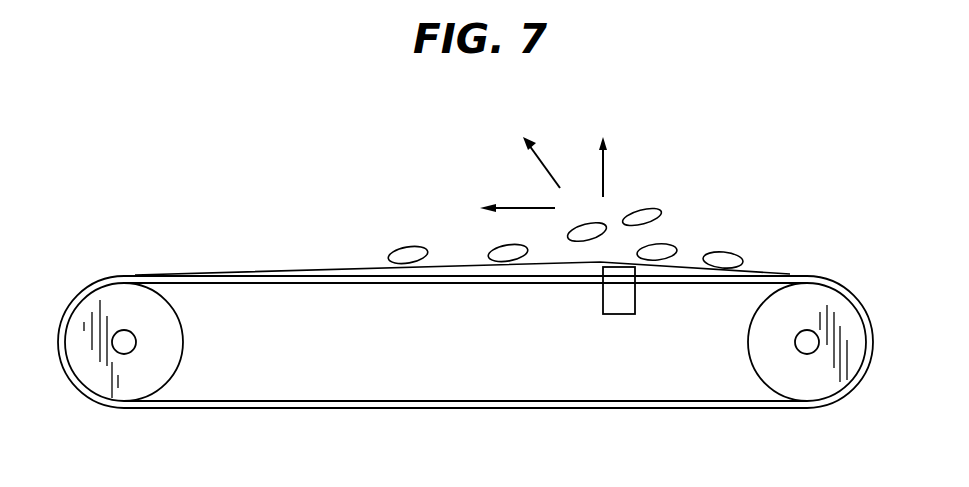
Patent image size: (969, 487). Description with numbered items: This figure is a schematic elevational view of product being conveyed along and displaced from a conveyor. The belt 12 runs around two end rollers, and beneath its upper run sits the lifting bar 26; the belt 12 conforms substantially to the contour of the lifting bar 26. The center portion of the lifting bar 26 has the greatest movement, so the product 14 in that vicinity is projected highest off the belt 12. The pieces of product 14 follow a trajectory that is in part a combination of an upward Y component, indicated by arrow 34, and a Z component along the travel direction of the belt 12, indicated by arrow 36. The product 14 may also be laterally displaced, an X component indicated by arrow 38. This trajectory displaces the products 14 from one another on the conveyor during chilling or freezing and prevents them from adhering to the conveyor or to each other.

The belt 12 is at (785, 273).
The product 14 is at (652, 210).
The lifting bar 26 is at (602, 300).
The arrow 34 is at (606, 165).
The arrow 36 is at (533, 148).
The arrow 38 is at (510, 207).